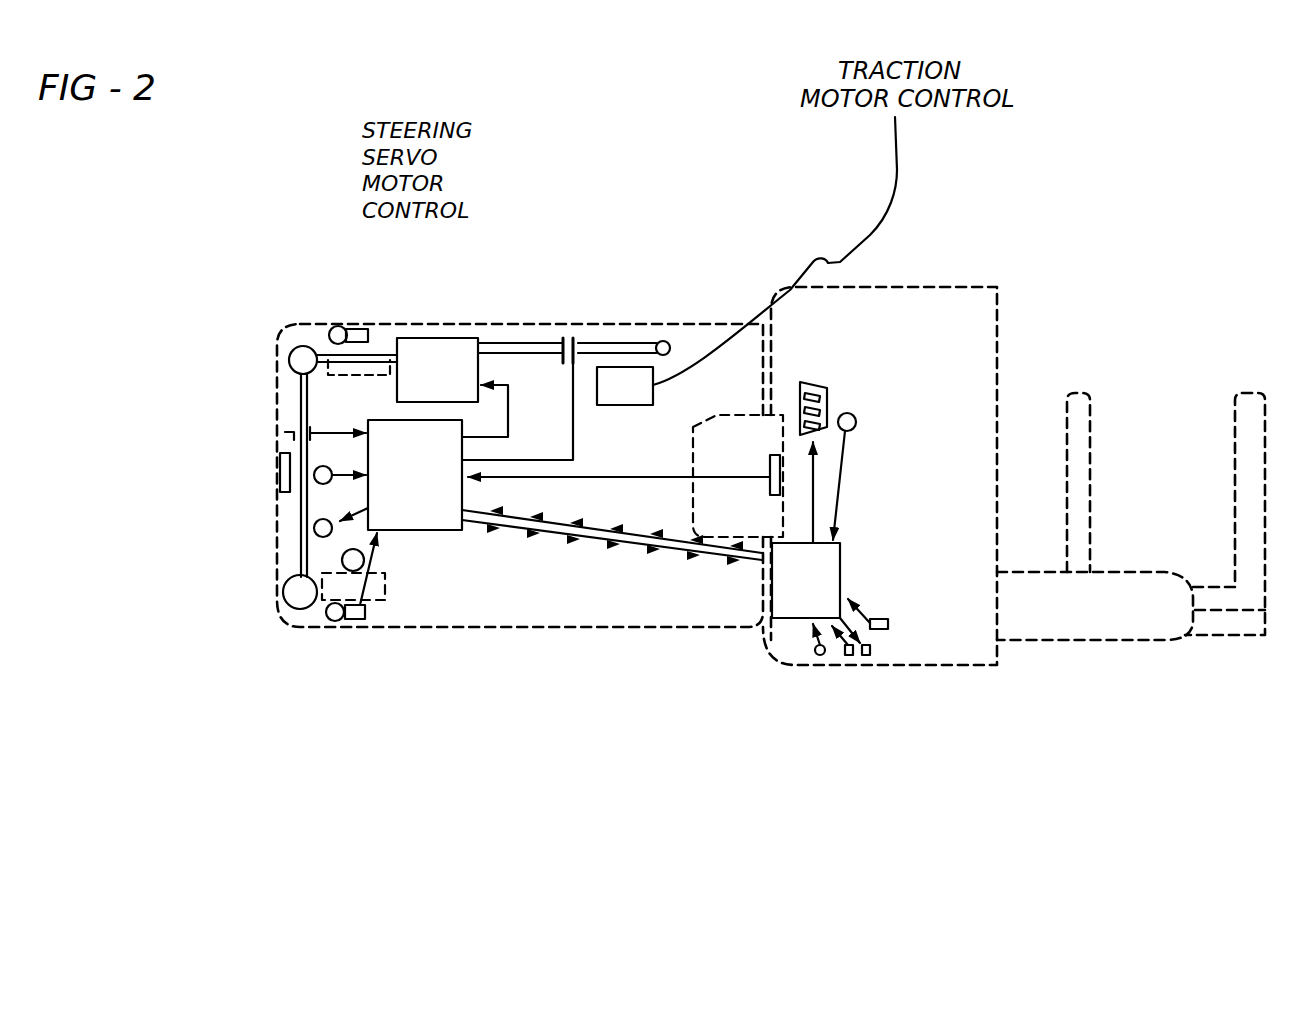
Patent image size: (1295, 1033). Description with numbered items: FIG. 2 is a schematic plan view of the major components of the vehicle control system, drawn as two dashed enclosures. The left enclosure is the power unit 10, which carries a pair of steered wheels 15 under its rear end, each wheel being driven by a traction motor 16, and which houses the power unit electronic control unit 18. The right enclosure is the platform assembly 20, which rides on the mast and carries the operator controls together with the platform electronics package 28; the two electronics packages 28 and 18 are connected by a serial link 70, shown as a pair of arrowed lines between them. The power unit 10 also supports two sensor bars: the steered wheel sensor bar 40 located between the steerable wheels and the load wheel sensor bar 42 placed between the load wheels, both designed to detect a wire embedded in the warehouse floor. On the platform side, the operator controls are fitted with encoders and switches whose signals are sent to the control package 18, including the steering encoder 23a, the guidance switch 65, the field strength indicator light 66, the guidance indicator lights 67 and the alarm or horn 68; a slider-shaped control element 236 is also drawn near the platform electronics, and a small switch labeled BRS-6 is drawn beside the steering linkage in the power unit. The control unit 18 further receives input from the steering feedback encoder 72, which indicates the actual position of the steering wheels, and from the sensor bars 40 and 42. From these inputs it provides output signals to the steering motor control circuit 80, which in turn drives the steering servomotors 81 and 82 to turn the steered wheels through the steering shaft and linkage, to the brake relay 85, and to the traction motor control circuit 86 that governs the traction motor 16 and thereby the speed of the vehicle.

The power unit 10 is at (708, 322).
The steered wheels 15 is at (313, 642).
The traction motor 16 is at (365, 603).
The power unit electronic control unit 18 is at (420, 518).
The platform assembly 20 is at (957, 373).
The steering encoder 23a is at (856, 416).
The direction selector switch 236 is at (822, 378).
The platform electronics package 28 is at (836, 558).
The steered wheel sensor bar 40 is at (276, 477).
The load wheel sensor bar 42 is at (836, 482).
The guidance switch 65 is at (888, 622).
The field strength indicator light 66 is at (843, 658).
The guidance indicator lights 67 is at (875, 665).
The alarm or horn 68 is at (805, 652).
The serial link 70 is at (661, 534).
The steering feedback encoder 72 is at (319, 489).
The steering motor control circuit 80 is at (428, 326).
The steering servomotor 81 is at (283, 357).
The steering servomotor 82 is at (568, 328).
The brake relay 85 is at (297, 549).
The traction motor control circuit 86 is at (642, 401).
The brake release switch BRS-6 is at (355, 324).